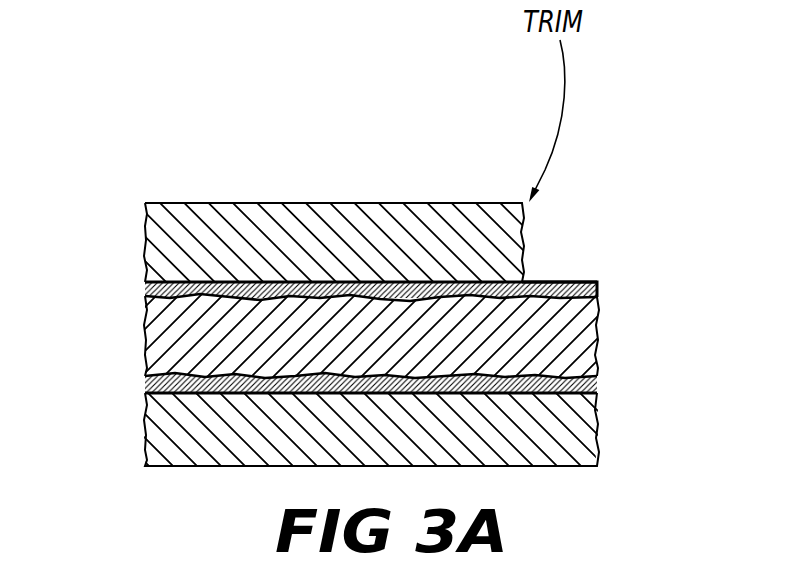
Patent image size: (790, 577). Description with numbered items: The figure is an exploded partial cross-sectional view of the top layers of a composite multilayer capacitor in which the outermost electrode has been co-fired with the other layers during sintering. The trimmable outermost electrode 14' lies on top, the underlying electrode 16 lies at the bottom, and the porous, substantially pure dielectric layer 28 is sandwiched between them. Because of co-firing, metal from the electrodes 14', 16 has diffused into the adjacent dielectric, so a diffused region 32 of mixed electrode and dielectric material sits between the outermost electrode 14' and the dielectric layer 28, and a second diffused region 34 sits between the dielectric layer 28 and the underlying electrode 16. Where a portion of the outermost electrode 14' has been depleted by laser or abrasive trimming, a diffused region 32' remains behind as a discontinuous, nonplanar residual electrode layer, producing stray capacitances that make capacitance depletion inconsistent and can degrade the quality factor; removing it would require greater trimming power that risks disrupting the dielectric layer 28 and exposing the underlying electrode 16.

The trimmable outermost electrode 14' is at (333, 207).
The diffused region 32 is at (408, 286).
The diffused region 32' is at (639, 316).
The dielectric layer 28 is at (150, 327).
The diffused region 34 is at (597, 382).
The electrode 16 is at (150, 424).